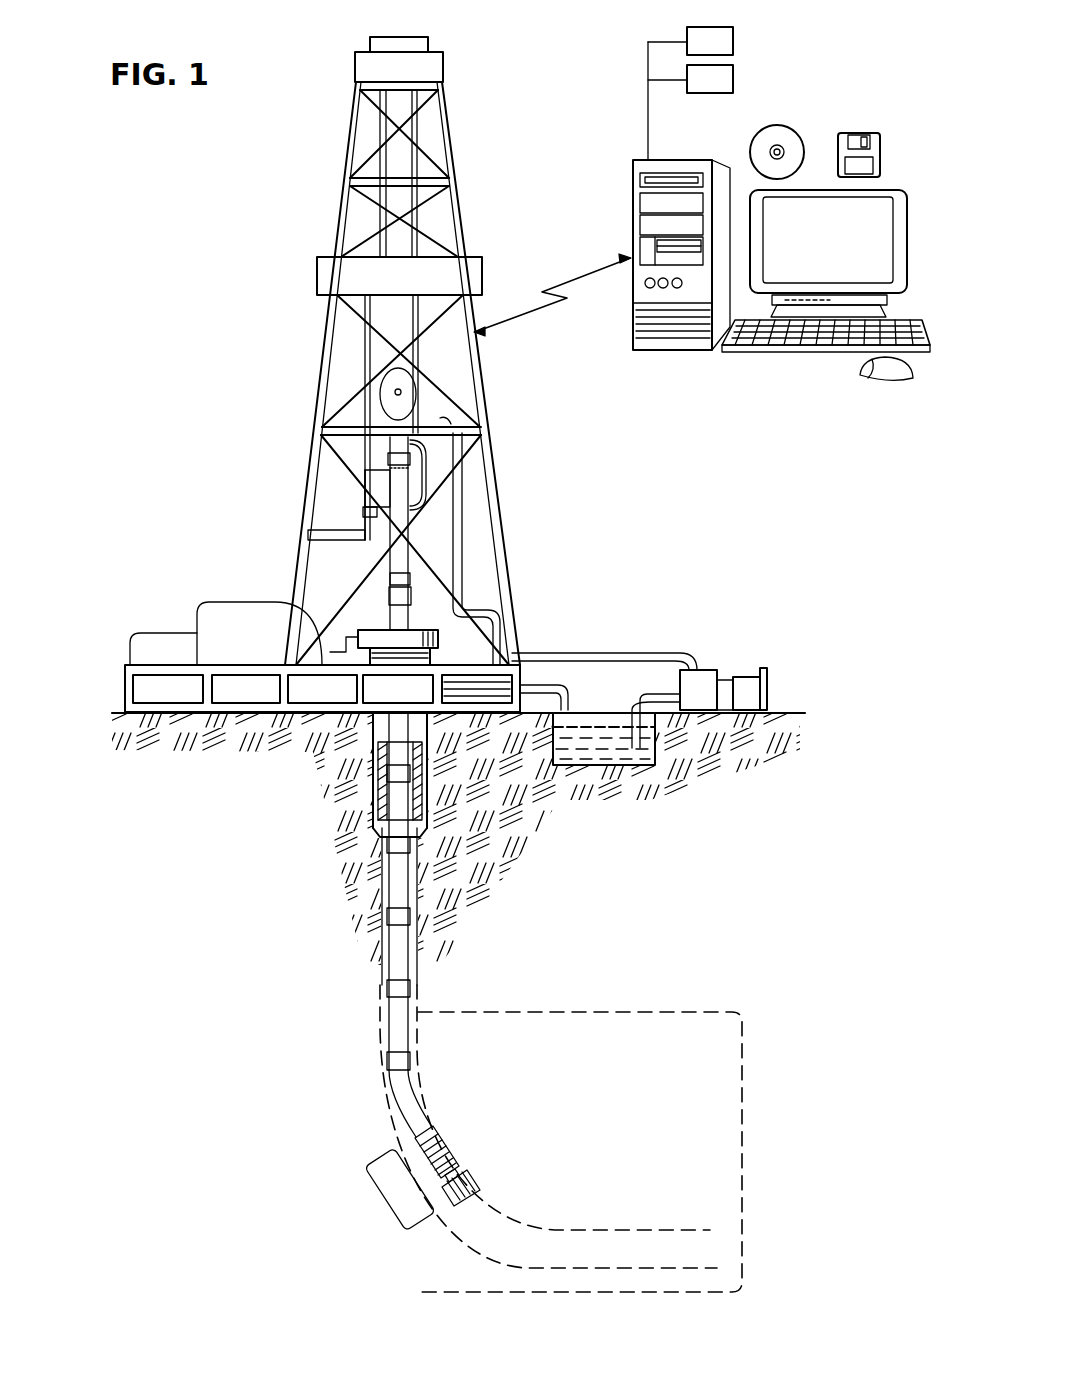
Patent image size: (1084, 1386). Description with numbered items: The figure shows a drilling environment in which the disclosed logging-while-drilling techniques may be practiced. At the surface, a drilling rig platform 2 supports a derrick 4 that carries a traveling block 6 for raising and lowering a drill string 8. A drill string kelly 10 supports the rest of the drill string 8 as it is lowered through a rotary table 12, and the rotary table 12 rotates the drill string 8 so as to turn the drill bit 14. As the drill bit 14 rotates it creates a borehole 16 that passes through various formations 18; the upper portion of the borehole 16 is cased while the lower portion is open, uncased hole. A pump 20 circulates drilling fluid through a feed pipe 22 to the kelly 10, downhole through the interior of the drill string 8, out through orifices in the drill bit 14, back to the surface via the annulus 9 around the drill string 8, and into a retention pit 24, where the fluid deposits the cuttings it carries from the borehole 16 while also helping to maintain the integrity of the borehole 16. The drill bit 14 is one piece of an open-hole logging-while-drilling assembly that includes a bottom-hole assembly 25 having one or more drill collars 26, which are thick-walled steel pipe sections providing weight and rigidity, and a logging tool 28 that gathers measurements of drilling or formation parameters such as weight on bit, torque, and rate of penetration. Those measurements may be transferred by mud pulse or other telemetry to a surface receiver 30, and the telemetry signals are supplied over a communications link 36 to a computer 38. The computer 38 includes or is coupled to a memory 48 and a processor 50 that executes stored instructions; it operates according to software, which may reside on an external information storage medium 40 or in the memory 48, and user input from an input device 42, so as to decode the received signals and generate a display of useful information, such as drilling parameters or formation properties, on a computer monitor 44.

The drilling rig platform 2 is at (123, 687).
The derrick 4 is at (455, 138).
The traveling block 6 is at (405, 393).
The drill string 8 is at (410, 873).
The annulus 9 is at (385, 883).
The drill string kelly 10 is at (400, 482).
The rotary table 12 is at (415, 630).
The drill bit 14 is at (462, 1180).
The borehole 16 is at (417, 907).
The formations 18 is at (742, 1147).
The pump 20 is at (697, 687).
The feed pipe 22 is at (612, 652).
The retention pit 24 is at (572, 752).
The bottom-hole assembly 25 is at (383, 1198).
The drill collars 26 is at (447, 1160).
The logging tool 28 is at (432, 1130).
The surface receiver 30 is at (410, 577).
The communications link 36 is at (583, 272).
The computer 38 is at (665, 350).
The external non-transient information storage medium 40 is at (790, 126).
The input device 42 is at (820, 352).
The computer monitor 44 is at (890, 190).
The memory 48 is at (733, 82).
The processor 50 is at (733, 38).